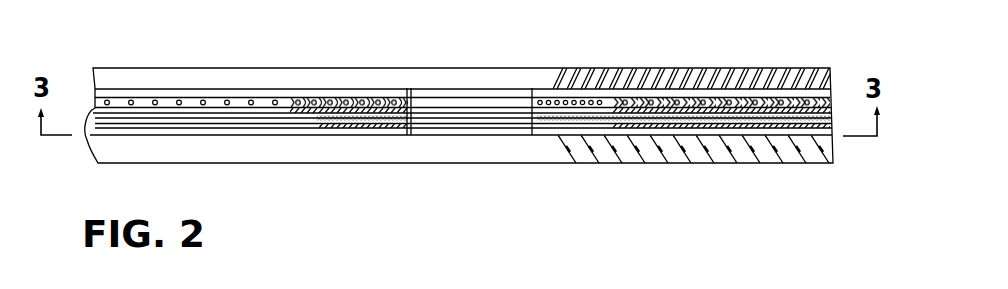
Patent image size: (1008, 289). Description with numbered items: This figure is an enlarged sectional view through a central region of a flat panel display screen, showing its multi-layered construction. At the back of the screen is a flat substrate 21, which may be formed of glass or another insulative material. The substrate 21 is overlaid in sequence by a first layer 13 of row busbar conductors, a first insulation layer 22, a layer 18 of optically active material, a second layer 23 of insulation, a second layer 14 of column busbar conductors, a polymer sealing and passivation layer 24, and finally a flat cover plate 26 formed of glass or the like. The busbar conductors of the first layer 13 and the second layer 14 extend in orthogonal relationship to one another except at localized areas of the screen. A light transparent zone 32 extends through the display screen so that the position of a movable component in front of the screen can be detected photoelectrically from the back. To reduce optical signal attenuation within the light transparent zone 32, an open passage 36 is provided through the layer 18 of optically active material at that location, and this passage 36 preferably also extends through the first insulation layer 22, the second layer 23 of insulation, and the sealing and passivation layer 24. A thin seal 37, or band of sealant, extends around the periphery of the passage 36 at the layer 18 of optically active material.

The first layer of busbar conductors 13 is at (382, 142).
The second layer of busbar conductors 14 is at (273, 90).
The layer of optically active material 18 is at (218, 113).
The substrate 21 is at (685, 165).
The first insulation layer 22 is at (295, 126).
The second layer of insulation 23 is at (290, 113).
The polymer sealing and passivation layer 24 is at (175, 88).
The flat cover plate 26 is at (697, 67).
The light transparent zone 32 is at (453, 176).
The open passage 36 is at (531, 120).
The seal 37 is at (407, 117).